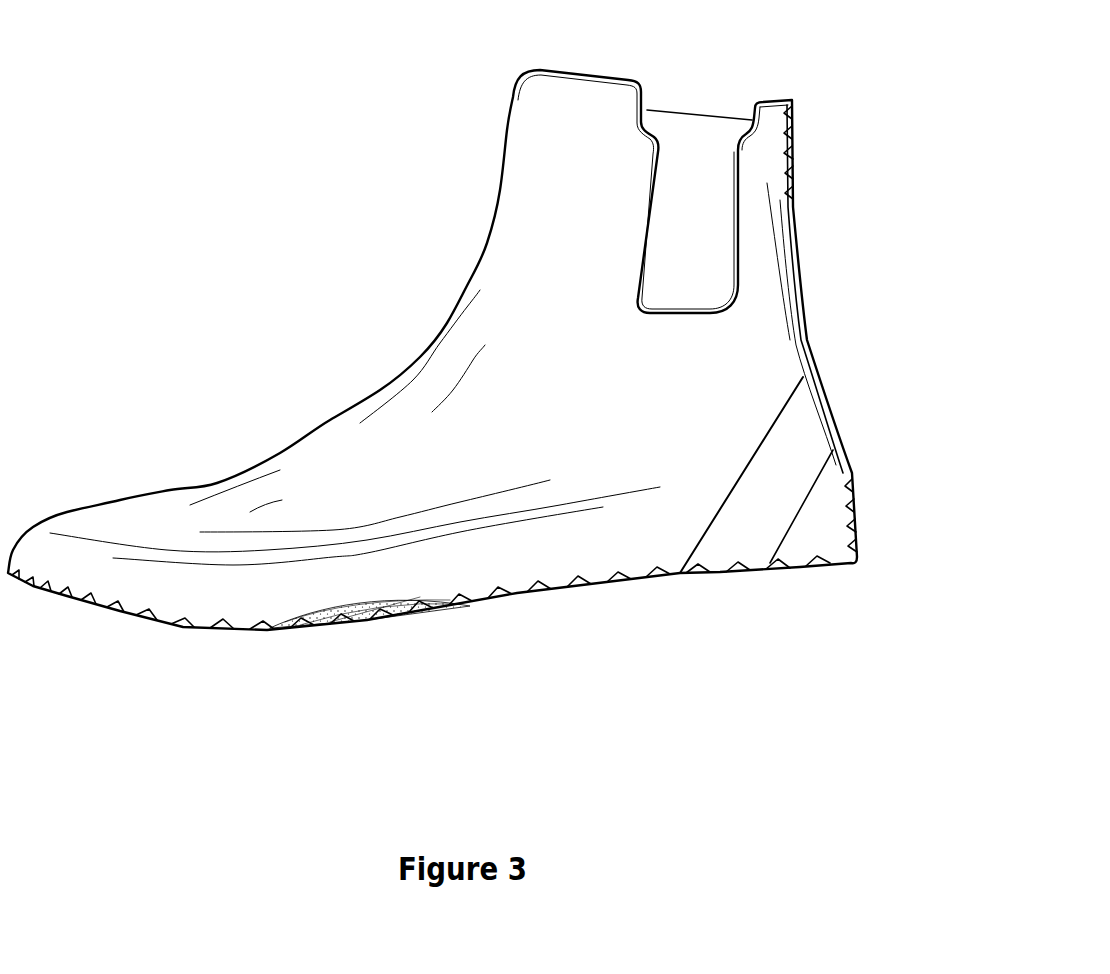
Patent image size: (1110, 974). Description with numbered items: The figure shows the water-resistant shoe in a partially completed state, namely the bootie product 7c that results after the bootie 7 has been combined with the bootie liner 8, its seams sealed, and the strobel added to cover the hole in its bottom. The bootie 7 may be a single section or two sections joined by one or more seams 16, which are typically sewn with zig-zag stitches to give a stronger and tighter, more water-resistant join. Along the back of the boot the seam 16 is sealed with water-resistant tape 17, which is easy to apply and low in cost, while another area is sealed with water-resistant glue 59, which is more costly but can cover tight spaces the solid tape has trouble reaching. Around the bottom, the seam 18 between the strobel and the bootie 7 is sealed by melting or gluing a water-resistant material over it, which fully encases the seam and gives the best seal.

The bootie 7 is at (184, 480).
The bootie product 7c is at (318, 230).
The bootie liner 8 is at (656, 85).
The seam 16 is at (801, 115).
The water-resistant tape 17 is at (806, 300).
The seam between strobel and bootie 18 is at (80, 616).
The water-resistant glue 59 is at (362, 607).